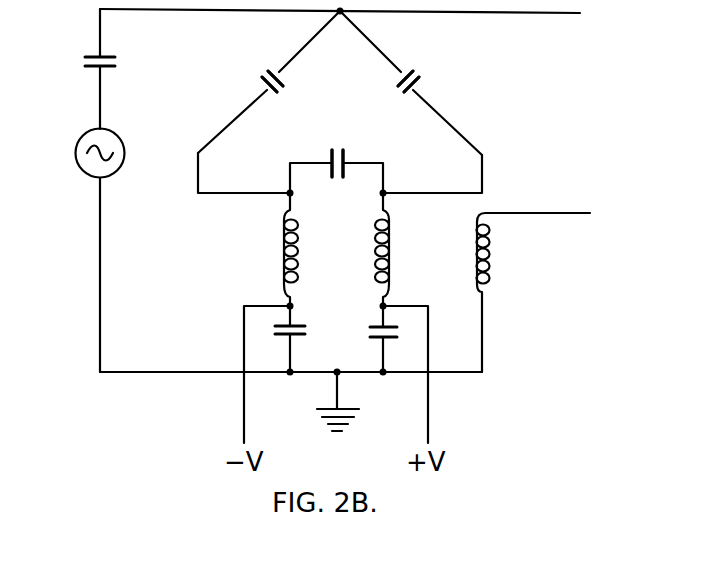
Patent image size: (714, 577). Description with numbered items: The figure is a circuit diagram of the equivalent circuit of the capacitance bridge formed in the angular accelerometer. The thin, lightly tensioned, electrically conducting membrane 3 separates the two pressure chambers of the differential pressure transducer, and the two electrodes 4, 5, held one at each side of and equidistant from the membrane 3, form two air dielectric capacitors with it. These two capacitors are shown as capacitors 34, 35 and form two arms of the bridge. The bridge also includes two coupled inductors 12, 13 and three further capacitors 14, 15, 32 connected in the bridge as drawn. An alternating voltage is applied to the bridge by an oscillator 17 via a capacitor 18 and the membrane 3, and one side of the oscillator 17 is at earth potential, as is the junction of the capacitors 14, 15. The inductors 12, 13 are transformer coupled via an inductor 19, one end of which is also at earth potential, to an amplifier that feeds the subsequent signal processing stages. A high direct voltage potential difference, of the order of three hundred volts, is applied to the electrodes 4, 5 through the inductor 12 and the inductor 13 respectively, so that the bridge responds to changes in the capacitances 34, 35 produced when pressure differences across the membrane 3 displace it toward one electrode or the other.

The membrane 3 is at (399, 83).
The electrode 4 is at (263, 83).
The electrode 5 is at (419, 85).
The inductor 12 is at (283, 244).
The inductor 13 is at (391, 249).
The capacitor 14 is at (302, 325).
The capacitor 15 is at (370, 338).
The oscillator 17 is at (76, 146).
The capacitor 18 is at (84, 59).
The inductor 19 is at (490, 252).
The capacitor 32 is at (347, 160).
The capacitor 34 is at (263, 74).
The capacitor 35 is at (421, 71).